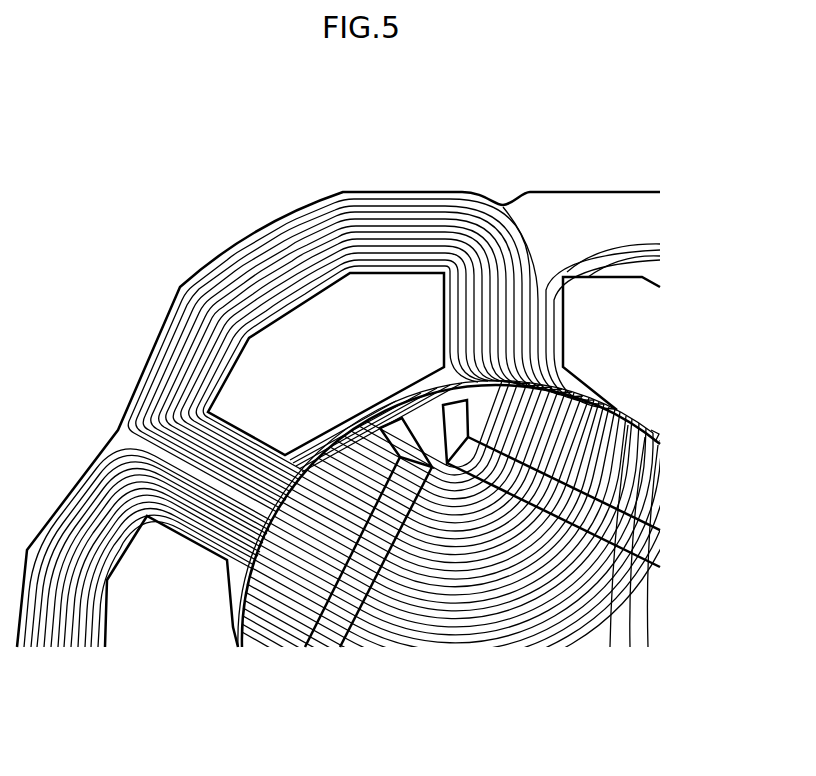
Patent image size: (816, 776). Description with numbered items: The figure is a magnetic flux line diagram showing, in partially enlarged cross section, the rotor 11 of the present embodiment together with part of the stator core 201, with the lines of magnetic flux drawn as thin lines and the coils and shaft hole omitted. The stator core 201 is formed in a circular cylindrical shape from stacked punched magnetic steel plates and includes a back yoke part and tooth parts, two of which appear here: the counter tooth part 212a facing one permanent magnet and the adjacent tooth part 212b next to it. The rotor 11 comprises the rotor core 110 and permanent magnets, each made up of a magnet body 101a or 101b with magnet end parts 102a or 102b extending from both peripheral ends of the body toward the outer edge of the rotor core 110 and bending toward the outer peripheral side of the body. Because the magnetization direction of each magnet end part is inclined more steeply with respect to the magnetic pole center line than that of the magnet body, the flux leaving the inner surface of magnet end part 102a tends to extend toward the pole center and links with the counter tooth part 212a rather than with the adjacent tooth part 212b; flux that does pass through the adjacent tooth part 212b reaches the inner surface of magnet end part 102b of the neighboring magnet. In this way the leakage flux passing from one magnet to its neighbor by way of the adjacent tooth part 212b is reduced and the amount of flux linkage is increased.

The stator core 201 is at (256, 231).
The counter tooth part 212a is at (180, 536).
The adjacent tooth part 212b is at (443, 309).
The rotor core 110 is at (645, 415).
The rotor 11 is at (627, 410).
The magnet body 101a is at (345, 620).
The magnet body 101b is at (630, 523).
The magnet end part 102a is at (380, 426).
The magnet end part 102b is at (440, 372).